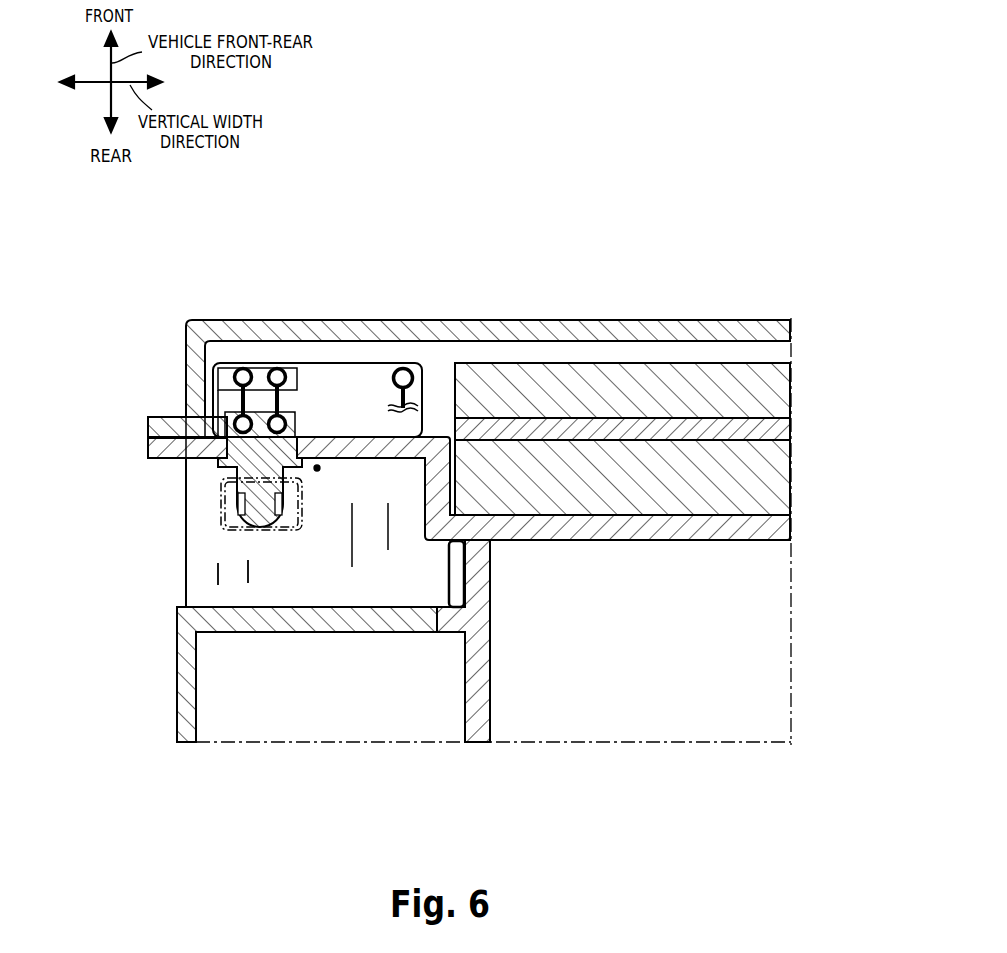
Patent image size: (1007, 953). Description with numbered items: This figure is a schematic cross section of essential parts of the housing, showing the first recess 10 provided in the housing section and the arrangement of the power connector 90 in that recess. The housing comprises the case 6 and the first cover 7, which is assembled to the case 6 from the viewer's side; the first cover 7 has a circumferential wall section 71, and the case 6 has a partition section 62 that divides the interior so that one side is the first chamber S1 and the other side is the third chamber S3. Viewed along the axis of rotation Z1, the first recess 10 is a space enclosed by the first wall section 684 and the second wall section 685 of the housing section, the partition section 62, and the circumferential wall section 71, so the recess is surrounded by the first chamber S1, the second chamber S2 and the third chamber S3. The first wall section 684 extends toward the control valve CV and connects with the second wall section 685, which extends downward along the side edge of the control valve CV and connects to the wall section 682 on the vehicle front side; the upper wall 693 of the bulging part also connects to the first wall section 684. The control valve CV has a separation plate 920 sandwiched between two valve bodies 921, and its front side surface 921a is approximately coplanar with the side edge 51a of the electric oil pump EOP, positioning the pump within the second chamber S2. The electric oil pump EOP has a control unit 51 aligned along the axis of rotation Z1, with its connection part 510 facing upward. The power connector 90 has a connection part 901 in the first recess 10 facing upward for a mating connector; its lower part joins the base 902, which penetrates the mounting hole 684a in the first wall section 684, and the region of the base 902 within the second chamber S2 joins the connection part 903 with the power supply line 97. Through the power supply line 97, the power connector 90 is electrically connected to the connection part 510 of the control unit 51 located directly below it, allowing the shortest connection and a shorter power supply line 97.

The case 6 is at (465, 710).
The first cover 7 is at (175, 700).
The first recess 10 is at (300, 591).
The control unit 51 is at (340, 368).
The side edge 51a is at (392, 372).
The connection part 510 is at (222, 362).
The partition section 62 is at (485, 592).
The circumferential wall section 71 is at (283, 618).
The wall section 682 is at (727, 532).
The first wall section 684 is at (365, 458).
The mounting hole 684a is at (285, 416).
The second wall section 685 is at (440, 490).
The upper wall 693 is at (202, 575).
The power connector 90 is at (92, 410).
The connection part 901 is at (220, 498).
The base 902 is at (230, 450).
The connection part 903 is at (230, 425).
The power supply line 97 is at (230, 388).
The separation plate 920 is at (775, 435).
The valve body 921 is at (775, 393).
The front side surface 921a is at (473, 363).
The electric oil pump EOP is at (321, 358).
The control valve CV is at (595, 363).
The first chamber S1 is at (556, 721).
The second chamber S2 is at (450, 372).
The third chamber S3 is at (248, 676).
The axis of rotation Z1 is at (317, 472).